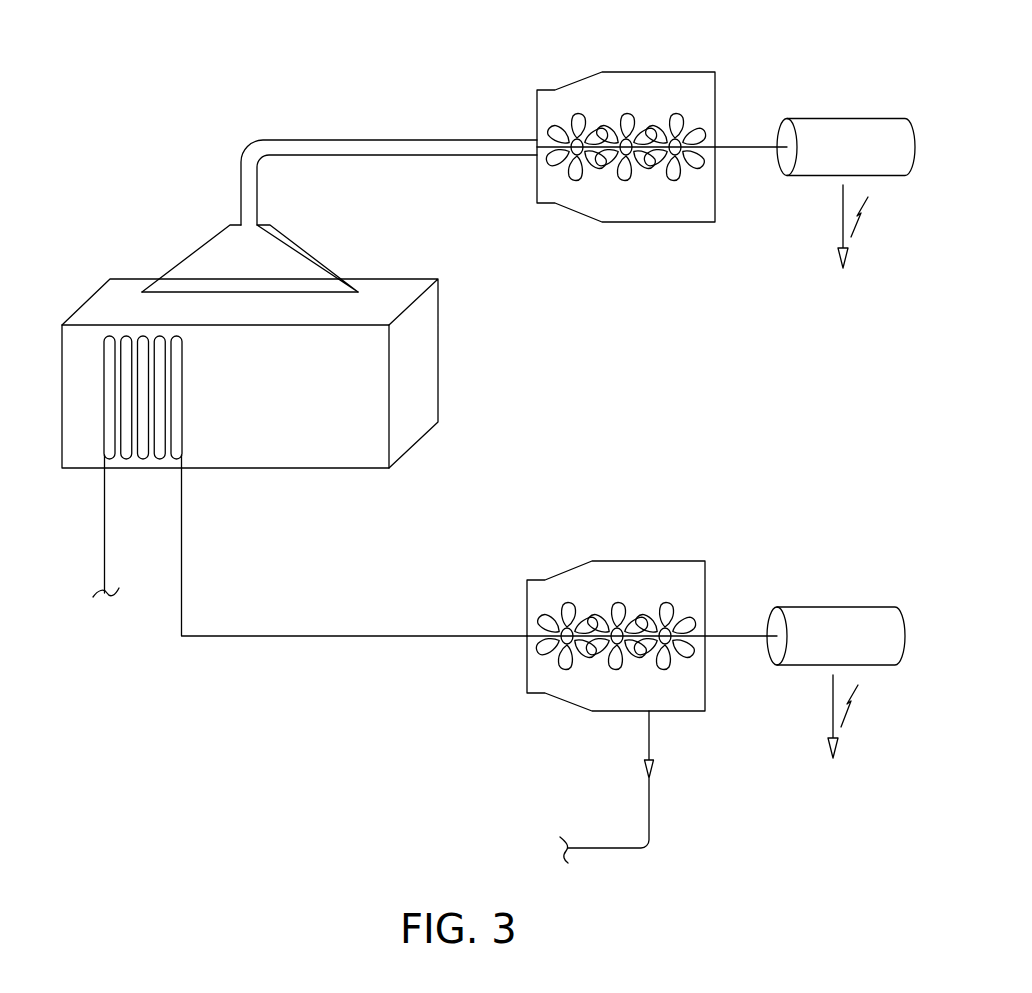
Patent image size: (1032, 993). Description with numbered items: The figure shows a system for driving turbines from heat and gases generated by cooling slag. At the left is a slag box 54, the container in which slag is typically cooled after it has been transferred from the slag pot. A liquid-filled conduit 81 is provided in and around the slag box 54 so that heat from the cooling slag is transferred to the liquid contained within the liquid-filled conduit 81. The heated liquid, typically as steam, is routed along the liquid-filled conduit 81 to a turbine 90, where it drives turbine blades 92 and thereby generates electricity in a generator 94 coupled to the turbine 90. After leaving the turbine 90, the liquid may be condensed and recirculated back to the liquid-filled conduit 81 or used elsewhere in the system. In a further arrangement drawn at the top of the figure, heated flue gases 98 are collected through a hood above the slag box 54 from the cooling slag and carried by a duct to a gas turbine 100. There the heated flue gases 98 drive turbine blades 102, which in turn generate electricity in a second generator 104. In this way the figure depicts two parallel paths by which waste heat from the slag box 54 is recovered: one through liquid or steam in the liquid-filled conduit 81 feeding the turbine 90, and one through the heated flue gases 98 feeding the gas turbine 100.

The slag box 54 is at (109, 302).
The heated flue gases 98 is at (271, 298).
The gas turbine 100 is at (703, 70).
The turbine blades 102 is at (628, 118).
The generator 104 is at (867, 118).
The liquid-filled conduit 81 is at (104, 567).
The turbine 90 is at (691, 560).
The turbine blades 92 is at (618, 607).
The generator 94 is at (855, 607).